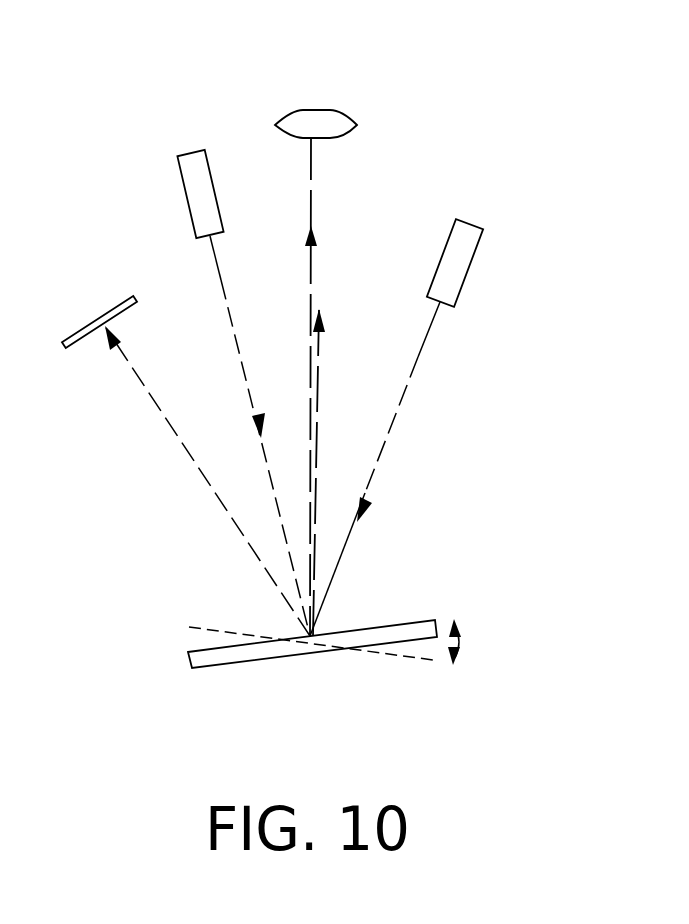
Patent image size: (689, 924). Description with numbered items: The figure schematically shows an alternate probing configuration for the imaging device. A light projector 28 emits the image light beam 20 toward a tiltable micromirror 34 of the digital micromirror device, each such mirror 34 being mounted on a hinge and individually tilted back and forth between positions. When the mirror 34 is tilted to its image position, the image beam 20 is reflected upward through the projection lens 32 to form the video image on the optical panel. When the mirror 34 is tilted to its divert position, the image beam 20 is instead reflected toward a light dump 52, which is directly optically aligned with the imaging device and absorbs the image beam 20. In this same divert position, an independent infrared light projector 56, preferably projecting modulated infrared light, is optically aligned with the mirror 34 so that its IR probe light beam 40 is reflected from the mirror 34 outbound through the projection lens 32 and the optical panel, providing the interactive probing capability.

The image light beam 20 is at (318, 367).
The light projector 28 is at (472, 263).
The projection lens 32 is at (337, 110).
The micromirror 34 is at (400, 621).
The IR probe light beam 40 is at (223, 280).
The light dump 52 is at (82, 329).
The infrared light projector 56 is at (187, 200).